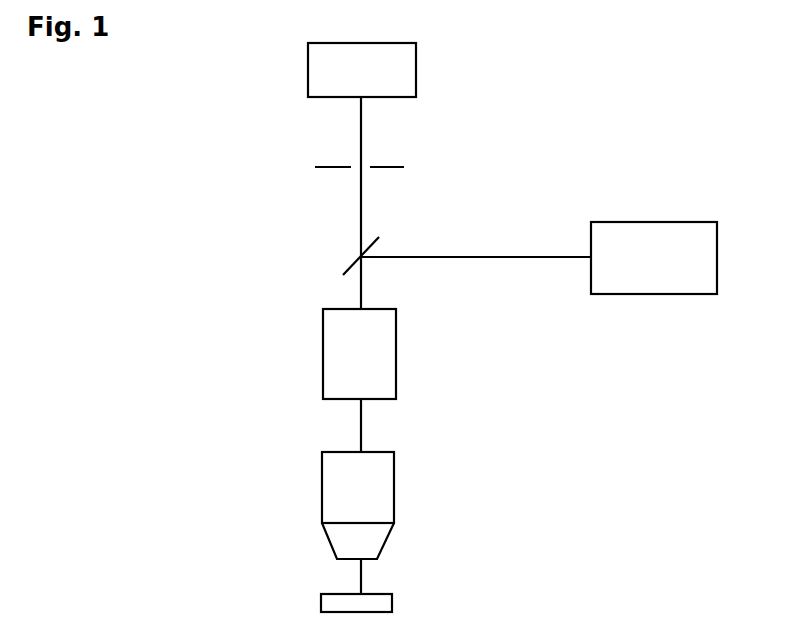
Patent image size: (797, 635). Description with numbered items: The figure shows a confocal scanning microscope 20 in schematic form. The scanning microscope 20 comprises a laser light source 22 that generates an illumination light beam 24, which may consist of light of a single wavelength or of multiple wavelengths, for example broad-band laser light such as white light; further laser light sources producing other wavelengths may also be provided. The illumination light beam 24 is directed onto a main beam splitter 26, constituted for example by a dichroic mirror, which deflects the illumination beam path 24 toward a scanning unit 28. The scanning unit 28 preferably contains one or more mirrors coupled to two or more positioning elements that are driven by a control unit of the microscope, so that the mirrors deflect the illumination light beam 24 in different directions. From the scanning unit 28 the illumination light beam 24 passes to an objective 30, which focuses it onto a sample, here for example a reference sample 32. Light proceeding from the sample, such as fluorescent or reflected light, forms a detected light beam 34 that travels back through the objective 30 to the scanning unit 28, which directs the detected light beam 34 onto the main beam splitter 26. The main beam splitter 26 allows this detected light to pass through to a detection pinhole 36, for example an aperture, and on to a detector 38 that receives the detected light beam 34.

The confocal scanning microscope 20 is at (205, 240).
The laser light source 22 is at (644, 294).
The illumination light beam 24 is at (517, 258).
The main beam splitter 26 is at (340, 269).
The scanning unit 28 is at (396, 382).
The objective 30 is at (394, 489).
The reference sample 32 is at (392, 603).
The detected light beam 34 is at (361, 207).
The detection pinhole 36 is at (404, 167).
The detector 38 is at (416, 73).